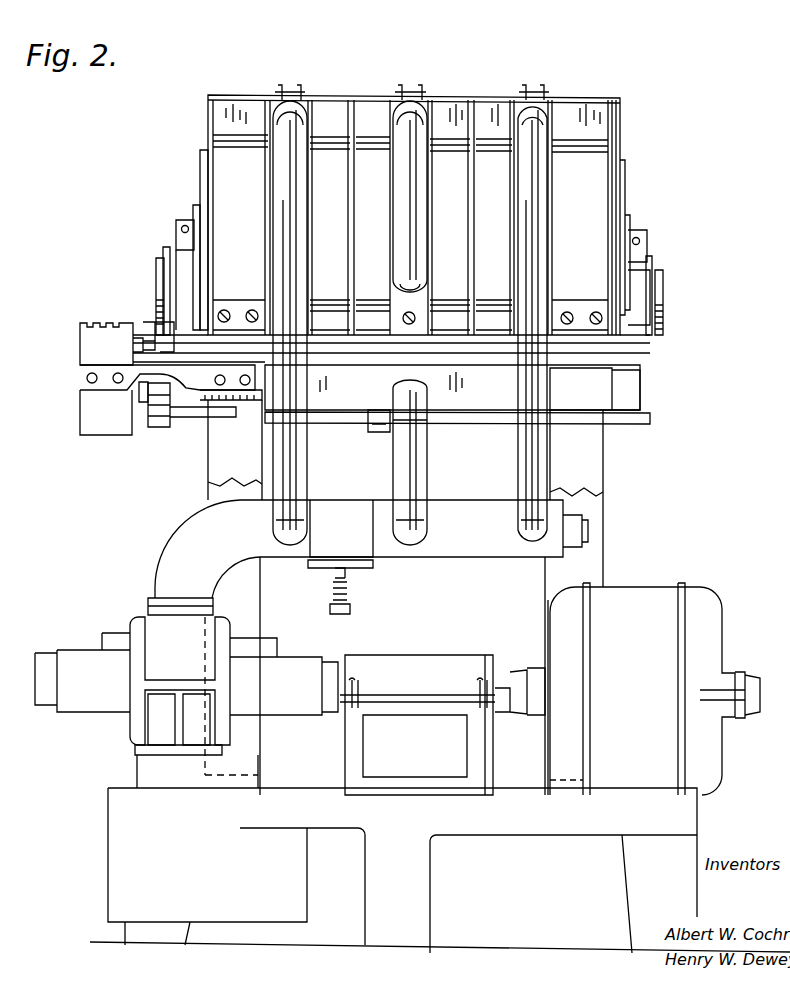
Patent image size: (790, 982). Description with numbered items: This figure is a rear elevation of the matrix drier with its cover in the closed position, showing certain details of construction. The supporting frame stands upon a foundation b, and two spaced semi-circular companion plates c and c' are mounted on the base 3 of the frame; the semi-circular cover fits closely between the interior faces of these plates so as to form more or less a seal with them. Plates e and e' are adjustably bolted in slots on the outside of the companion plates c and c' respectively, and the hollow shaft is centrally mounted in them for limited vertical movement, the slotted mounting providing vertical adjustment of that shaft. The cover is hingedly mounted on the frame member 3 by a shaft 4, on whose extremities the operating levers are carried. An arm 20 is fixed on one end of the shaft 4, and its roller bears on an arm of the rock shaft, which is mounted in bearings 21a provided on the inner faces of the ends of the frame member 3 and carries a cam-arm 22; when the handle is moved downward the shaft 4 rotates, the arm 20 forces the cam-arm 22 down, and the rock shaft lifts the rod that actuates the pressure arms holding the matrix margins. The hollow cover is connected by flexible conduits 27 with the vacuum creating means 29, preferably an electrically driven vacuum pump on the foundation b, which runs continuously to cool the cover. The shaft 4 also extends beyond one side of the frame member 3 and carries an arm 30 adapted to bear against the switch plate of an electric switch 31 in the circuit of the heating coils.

The base 3 is at (597, 392).
The shaft 4 is at (500, 348).
The arm 20 is at (144, 402).
The bearings 21a is at (482, 414).
The cam-arm 22 is at (378, 424).
The flexible conduits 27 is at (518, 462).
The vacuum creating means 29 is at (158, 632).
The arm 30 is at (101, 322).
The electric switch 31 is at (95, 425).
The foundation b is at (120, 832).
The companion plate c is at (433, 215).
The companion plate c' is at (185, 240).
The plate e is at (660, 270).
The plate e' is at (168, 267).